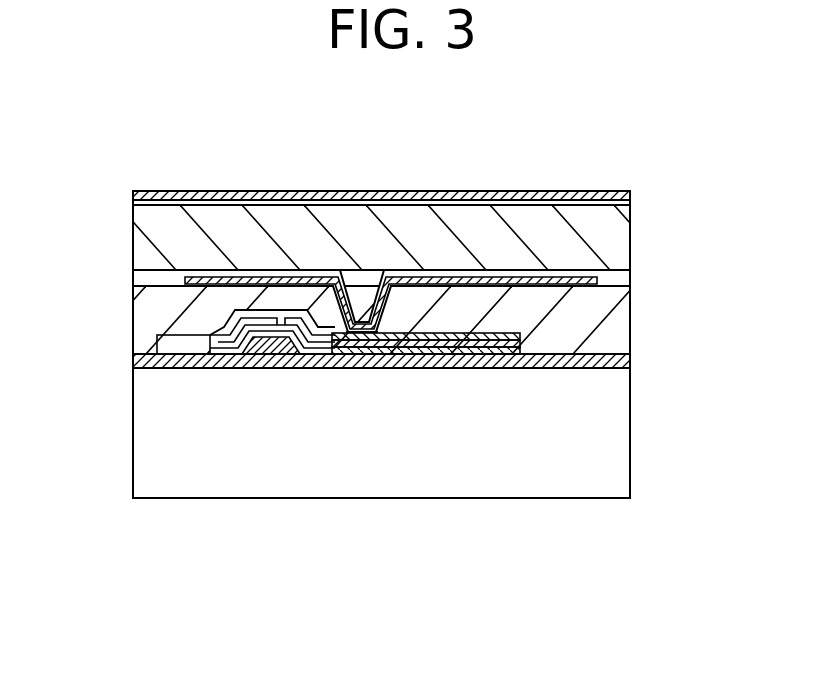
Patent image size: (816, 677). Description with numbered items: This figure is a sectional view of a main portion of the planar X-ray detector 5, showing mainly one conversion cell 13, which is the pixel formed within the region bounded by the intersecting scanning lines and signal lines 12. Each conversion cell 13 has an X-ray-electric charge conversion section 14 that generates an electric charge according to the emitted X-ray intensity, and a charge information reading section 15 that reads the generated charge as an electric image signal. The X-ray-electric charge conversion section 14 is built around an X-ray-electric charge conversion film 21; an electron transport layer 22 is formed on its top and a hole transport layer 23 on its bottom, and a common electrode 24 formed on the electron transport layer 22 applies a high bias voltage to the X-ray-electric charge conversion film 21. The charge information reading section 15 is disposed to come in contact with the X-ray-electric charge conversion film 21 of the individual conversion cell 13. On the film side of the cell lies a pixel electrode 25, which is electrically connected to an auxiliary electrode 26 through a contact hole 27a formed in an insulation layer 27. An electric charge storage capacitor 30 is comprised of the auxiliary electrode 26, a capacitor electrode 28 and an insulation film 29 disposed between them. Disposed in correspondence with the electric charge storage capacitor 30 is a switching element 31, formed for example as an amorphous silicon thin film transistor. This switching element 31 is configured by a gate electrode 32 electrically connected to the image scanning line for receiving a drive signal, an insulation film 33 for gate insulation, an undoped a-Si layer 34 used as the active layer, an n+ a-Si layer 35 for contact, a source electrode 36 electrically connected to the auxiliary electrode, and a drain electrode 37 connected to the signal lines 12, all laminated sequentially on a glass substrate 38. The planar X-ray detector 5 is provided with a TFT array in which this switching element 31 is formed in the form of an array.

The planar X-ray detector 5 is at (227, 154).
The signal line 12 is at (136, 346).
The conversion cell 13 is at (388, 190).
The X-ray-electric charge conversion section 14 is at (388, 202).
The charge information reading section 15 is at (388, 349).
The X-ray-electric charge conversion film 21 is at (153, 232).
The electron transport layer 22 is at (133, 203).
The hole transport layer 23 is at (133, 278).
The common electrode 24 is at (285, 191).
The pixel electrode 25 is at (183, 280).
The auxiliary electrode 26 is at (527, 414).
The insulation layer 27 is at (607, 310).
The contact hole 27a is at (363, 370).
The capacitor electrode 28 is at (468, 370).
The insulation film 29 is at (508, 370).
The electric charge storage capacitor 30 is at (429, 398).
The switching element 31 is at (215, 375).
The gate electrode 32 is at (283, 370).
The insulation film for gate insulation 33 is at (245, 370).
The undoped a-Si layer 34 is at (210, 370).
The n+ a-Si layer 35 is at (183, 370).
The source electrode 36 is at (328, 370).
The drain electrode 37 is at (230, 316).
The glass substrate 38 is at (617, 428).